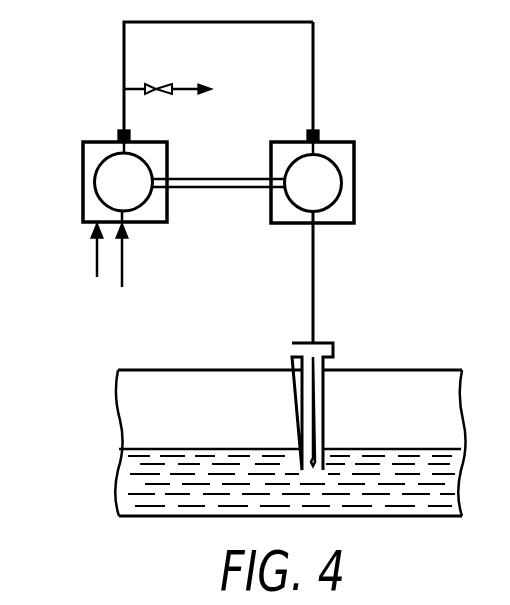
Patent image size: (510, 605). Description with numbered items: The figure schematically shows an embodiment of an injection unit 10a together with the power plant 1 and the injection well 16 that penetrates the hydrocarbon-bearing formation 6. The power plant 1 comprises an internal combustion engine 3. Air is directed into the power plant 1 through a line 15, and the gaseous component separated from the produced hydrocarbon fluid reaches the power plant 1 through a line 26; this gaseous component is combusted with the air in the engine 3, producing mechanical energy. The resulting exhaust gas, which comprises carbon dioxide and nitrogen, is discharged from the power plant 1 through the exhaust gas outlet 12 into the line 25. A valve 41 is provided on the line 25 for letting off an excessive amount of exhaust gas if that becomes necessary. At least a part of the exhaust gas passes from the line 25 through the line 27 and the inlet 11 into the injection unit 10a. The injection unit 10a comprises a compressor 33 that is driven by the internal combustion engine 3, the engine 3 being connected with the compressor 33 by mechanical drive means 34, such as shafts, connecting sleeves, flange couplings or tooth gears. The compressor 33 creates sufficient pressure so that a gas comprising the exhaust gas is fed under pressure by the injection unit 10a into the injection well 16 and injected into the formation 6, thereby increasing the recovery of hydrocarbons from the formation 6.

The power plant 1 is at (97, 157).
The internal combustion engine 3 is at (110, 186).
The exhaust gas outlet 12 is at (118, 136).
The line 25 is at (123, 108).
The valve 41 is at (150, 88).
The line 27 is at (315, 93).
The inlet 11 is at (311, 133).
The mechanical drive means 34 is at (222, 178).
The compressor 33 is at (330, 183).
The injection unit 10a is at (272, 219).
The line 15 is at (97, 252).
The line 26 is at (124, 252).
The injection well 16 is at (300, 402).
The hydrocarbon-bearing formation 6 is at (161, 472).